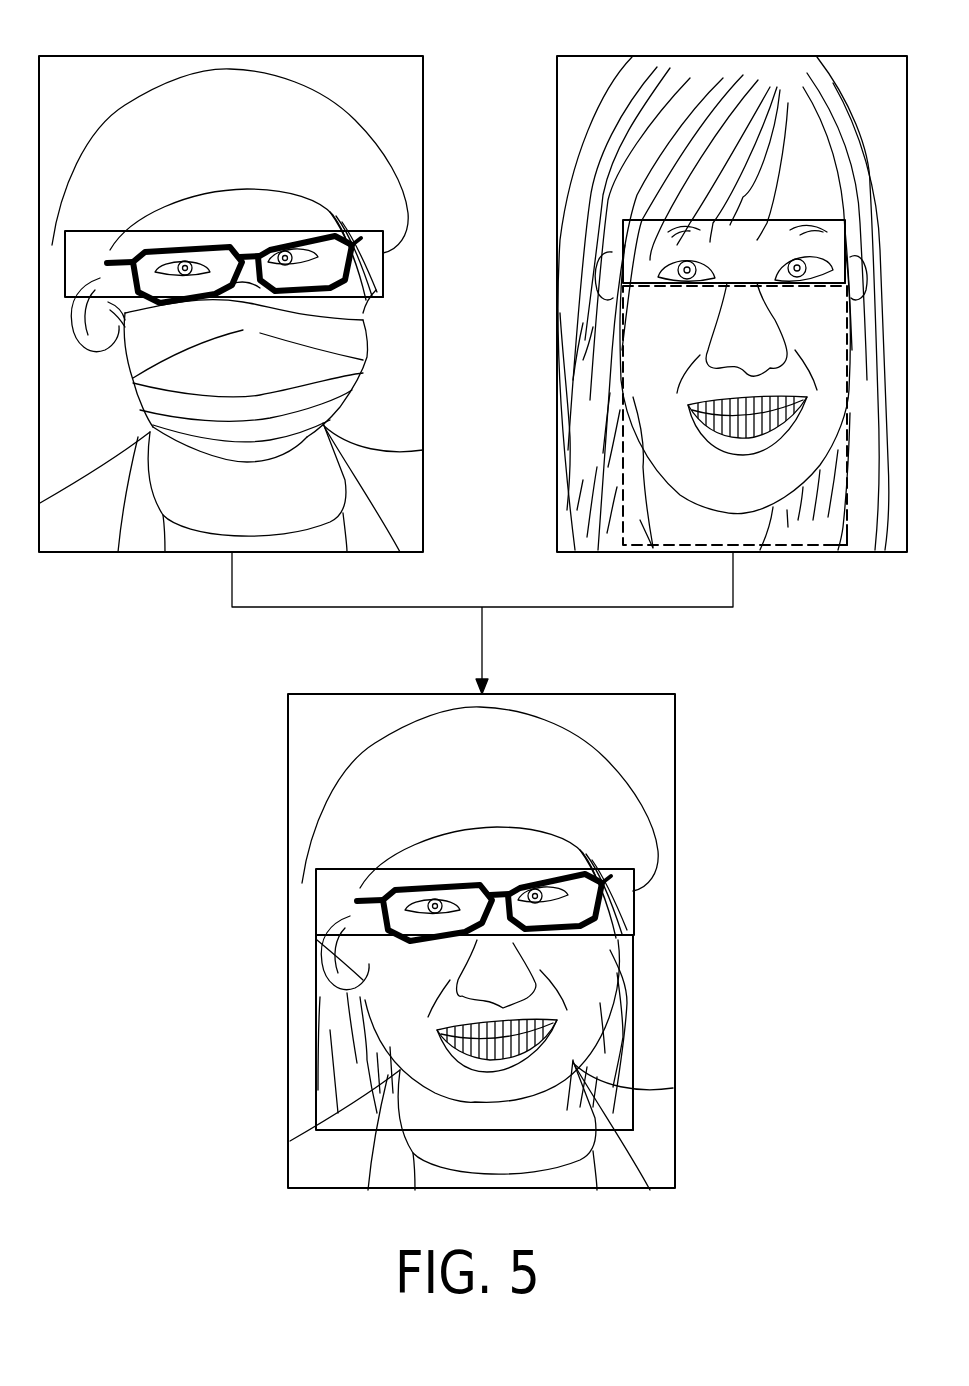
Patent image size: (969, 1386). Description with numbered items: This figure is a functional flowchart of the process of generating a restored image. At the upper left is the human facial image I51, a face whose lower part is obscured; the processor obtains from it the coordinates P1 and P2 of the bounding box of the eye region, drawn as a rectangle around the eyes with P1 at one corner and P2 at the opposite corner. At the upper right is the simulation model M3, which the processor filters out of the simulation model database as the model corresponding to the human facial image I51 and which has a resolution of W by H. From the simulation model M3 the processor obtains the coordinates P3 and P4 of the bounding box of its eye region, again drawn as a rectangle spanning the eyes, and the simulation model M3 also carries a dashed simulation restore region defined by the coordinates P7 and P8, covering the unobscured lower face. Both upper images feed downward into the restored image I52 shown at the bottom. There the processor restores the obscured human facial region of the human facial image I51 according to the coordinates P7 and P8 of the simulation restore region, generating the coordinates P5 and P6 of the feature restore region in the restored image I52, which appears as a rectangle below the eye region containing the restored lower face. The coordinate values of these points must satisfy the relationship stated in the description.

The human facial image I51 is at (222, 56).
The simulation model M3 is at (703, 56).
The restored image I52 is at (675, 827).
The coordinates of the bounding box of the eye region P1 is at (214, 242).
The coordinates of the bounding box of the eye region P2 is at (384, 309).
The coordinates of the bounding box of the eye region P3 is at (722, 235).
The coordinates of the bounding box of the eye region P4 is at (853, 290).
The coordinates of the feature restore region P5 is at (459, 999).
The coordinates of the feature restore region P6 is at (641, 1135).
The coordinates of the simulation restore region P7 is at (720, 410).
The coordinates of the simulation restore region P8 is at (853, 537).